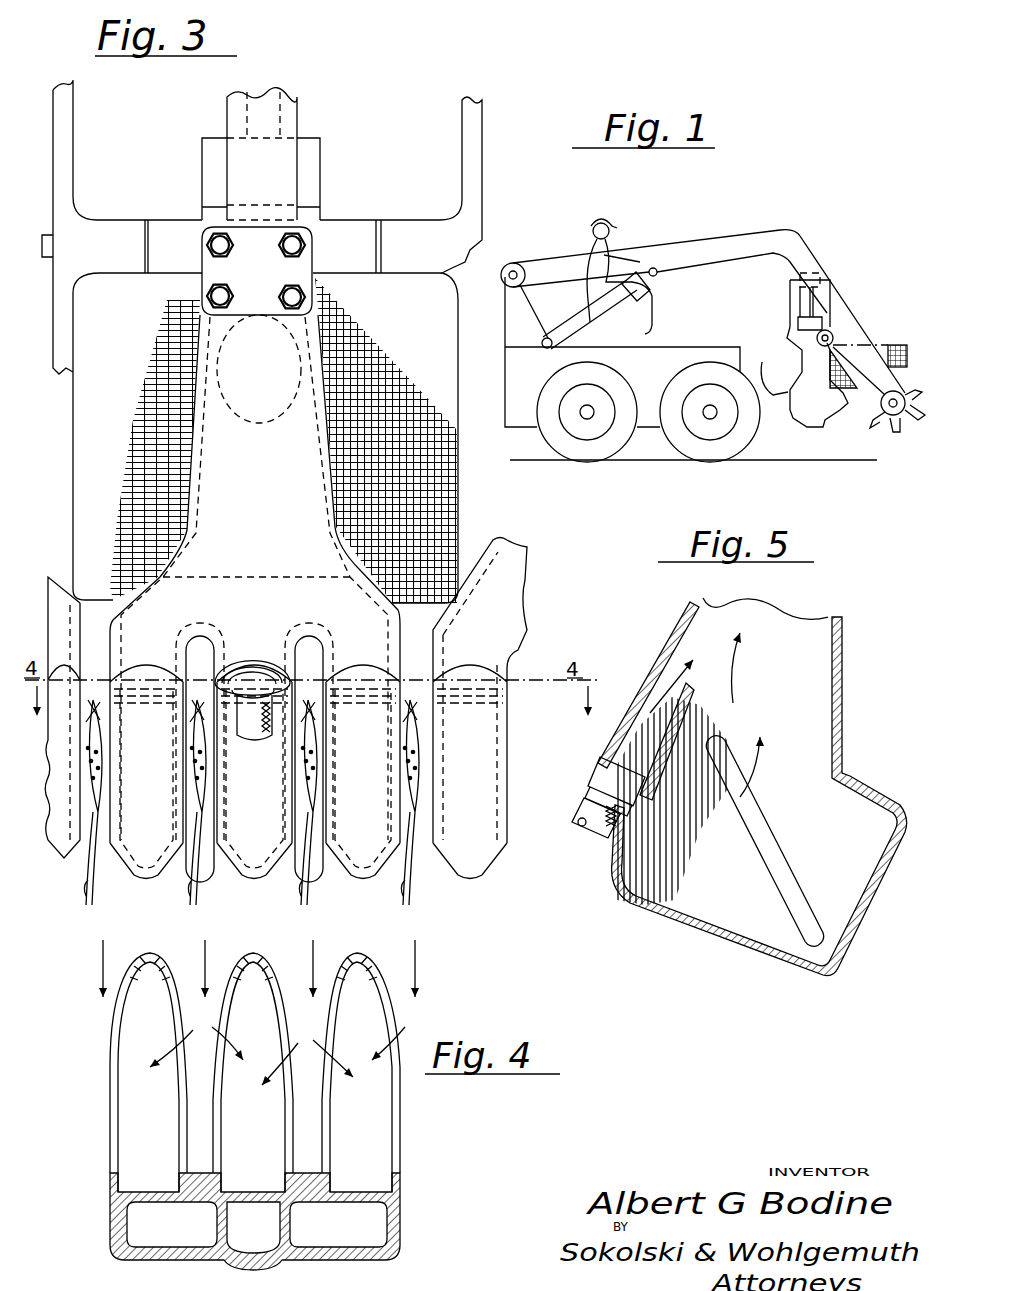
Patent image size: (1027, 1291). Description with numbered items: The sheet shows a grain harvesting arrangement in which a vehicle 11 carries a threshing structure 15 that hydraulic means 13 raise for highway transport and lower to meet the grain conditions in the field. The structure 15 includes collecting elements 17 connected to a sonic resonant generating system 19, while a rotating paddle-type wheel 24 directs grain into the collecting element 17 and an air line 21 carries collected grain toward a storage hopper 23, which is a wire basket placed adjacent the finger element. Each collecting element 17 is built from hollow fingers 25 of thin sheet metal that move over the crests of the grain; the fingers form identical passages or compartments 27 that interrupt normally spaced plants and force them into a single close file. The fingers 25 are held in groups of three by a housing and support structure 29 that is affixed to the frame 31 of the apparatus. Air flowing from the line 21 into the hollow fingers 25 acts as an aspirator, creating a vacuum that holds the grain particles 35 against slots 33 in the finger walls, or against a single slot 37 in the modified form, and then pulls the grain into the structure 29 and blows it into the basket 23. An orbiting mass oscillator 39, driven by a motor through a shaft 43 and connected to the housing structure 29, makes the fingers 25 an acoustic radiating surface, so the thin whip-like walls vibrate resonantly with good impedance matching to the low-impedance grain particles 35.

In FIG. 1, the vehicle 11 is at (513, 437).
In FIG. 1, the hydraulic means 13 is at (630, 298).
In FIG. 3, the structure 15 is at (390, 117).
In FIG. 1, the structure 15 is at (853, 283).
In FIG. 3, the collecting element 17 is at (545, 615).
In FIG. 1, the collecting element 17 is at (818, 420).
In FIG. 5, the collecting element 17 is at (622, 920).
In FIG. 4, the collecting element 17 is at (423, 1173).
In FIG. 1, the sonic resonant generating system 19 is at (788, 313).
In FIG. 3, the air line 21 is at (243, 737).
In FIG. 1, the air line 21 is at (773, 378).
In FIG. 5, the air line 21 is at (597, 805).
In FIG. 3, the storage hopper 23 is at (87, 443).
In FIG. 1, the storage hopper 23 is at (897, 345).
In FIG. 1, the rotating paddle-type wheel 24 is at (897, 428).
In FIG. 3, the fingers 25 is at (264, 728).
In FIG. 5, the fingers 25 is at (683, 933).
In FIG. 4, the fingers 25 is at (360, 954).
In FIG. 3, the passages or compartments 27 is at (317, 647).
In FIG. 4, the passages or compartments 27 is at (310, 1140).
In FIG. 3, the housing and support structure 29 is at (265, 558).
In FIG. 3, the frame 31 is at (358, 232).
In FIG. 4, the slots 33 is at (400, 1112).
In FIG. 3, the grain particles 35 is at (408, 762).
In FIG. 5, the single slot 37 is at (780, 860).
In FIG. 3, the orbiting mass oscillator 39 is at (213, 170).
In FIG. 3, the shaft 43 is at (278, 115).